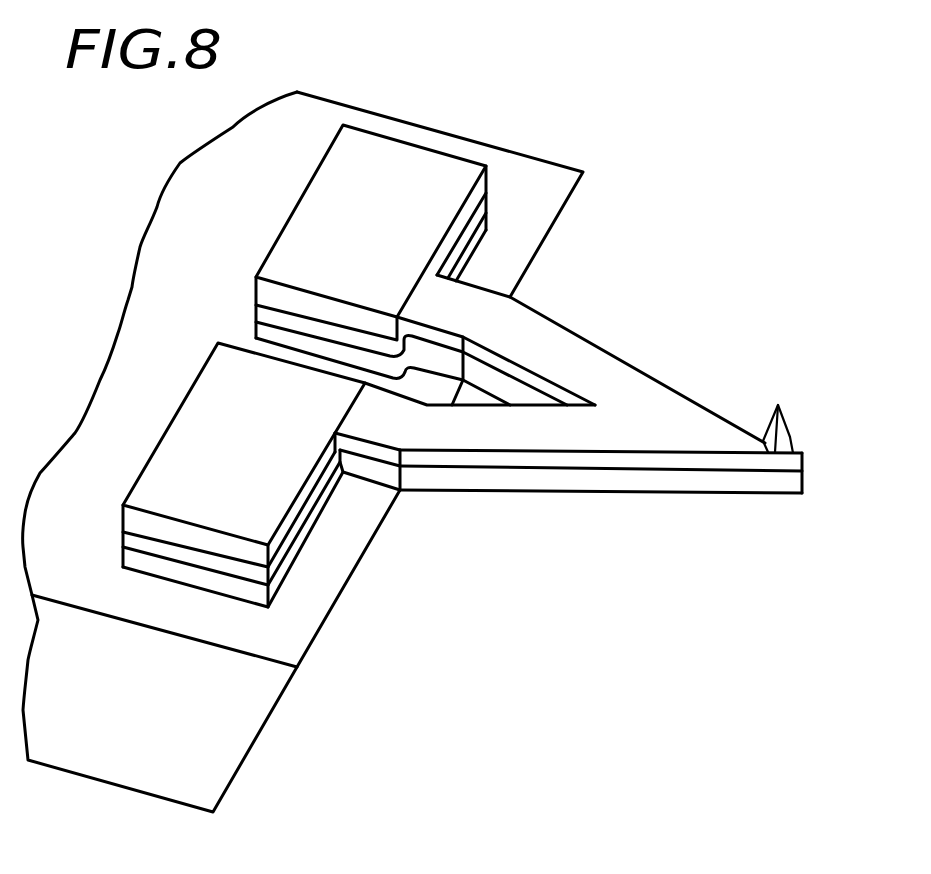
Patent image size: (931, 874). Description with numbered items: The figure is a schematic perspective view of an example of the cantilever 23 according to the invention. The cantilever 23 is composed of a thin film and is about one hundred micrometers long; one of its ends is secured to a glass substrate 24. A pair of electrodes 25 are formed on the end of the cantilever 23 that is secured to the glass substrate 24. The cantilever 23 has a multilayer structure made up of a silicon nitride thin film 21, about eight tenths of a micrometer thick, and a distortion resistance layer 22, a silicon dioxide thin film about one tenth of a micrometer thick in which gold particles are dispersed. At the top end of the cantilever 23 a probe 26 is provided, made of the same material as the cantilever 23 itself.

The Si3N4 thin film 21 is at (601, 481).
The distortion resistance layer 22 is at (782, 462).
The cantilever 23 is at (607, 347).
The glass substrate 24 is at (228, 697).
The electrodes 25 is at (421, 170).
The probe 26 is at (783, 433).